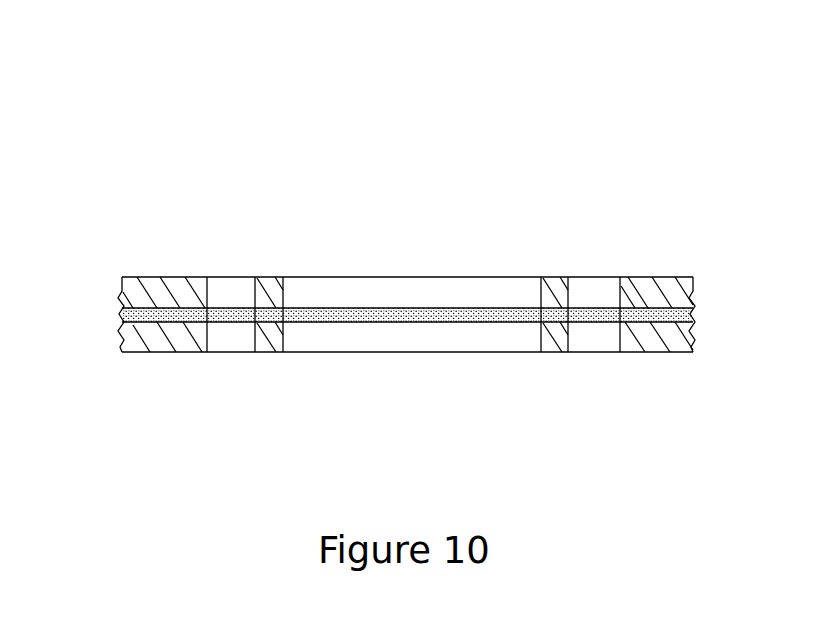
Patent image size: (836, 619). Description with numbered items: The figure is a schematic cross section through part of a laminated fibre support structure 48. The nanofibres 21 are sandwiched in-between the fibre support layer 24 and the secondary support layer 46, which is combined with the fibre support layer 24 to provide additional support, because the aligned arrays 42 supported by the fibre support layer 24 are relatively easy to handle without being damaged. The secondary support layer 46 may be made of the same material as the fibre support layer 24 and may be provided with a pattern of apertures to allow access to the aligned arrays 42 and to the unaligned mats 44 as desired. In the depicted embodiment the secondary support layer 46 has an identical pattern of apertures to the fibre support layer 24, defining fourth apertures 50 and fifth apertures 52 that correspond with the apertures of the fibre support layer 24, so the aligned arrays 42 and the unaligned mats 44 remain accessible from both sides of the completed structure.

The laminated fibre support structure 48 is at (645, 168).
The fibre support layer 24 is at (138, 338).
The nanofibres 21 is at (455, 322).
The secondary support layer 46 is at (147, 277).
The unaligned mats 44 is at (232, 305).
The fourth apertures 50 is at (253, 292).
The aligned arrays 42 is at (432, 305).
The fifth apertures 52 is at (536, 297).